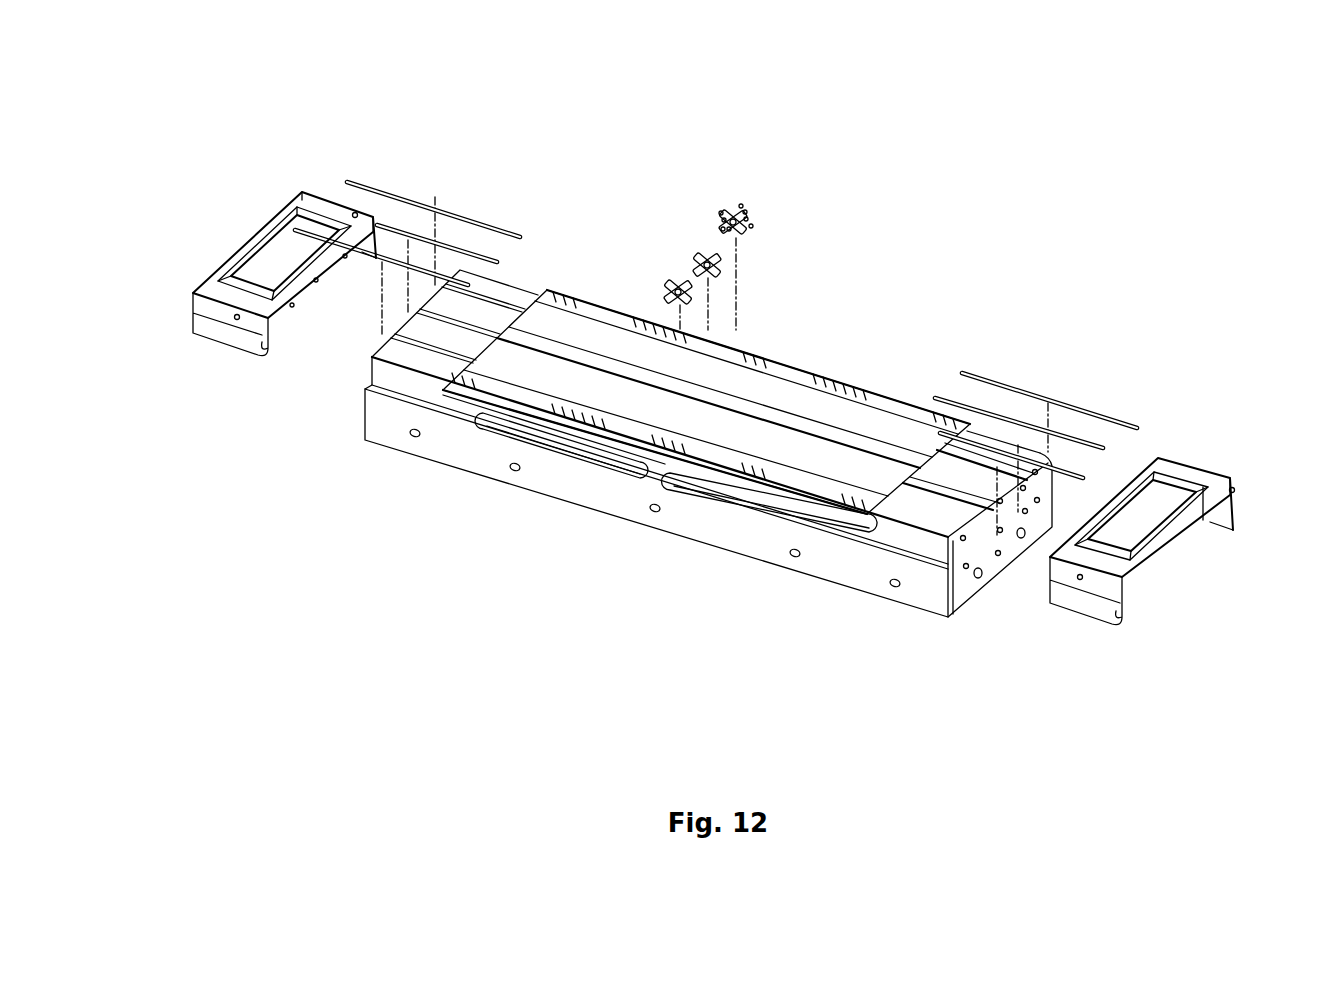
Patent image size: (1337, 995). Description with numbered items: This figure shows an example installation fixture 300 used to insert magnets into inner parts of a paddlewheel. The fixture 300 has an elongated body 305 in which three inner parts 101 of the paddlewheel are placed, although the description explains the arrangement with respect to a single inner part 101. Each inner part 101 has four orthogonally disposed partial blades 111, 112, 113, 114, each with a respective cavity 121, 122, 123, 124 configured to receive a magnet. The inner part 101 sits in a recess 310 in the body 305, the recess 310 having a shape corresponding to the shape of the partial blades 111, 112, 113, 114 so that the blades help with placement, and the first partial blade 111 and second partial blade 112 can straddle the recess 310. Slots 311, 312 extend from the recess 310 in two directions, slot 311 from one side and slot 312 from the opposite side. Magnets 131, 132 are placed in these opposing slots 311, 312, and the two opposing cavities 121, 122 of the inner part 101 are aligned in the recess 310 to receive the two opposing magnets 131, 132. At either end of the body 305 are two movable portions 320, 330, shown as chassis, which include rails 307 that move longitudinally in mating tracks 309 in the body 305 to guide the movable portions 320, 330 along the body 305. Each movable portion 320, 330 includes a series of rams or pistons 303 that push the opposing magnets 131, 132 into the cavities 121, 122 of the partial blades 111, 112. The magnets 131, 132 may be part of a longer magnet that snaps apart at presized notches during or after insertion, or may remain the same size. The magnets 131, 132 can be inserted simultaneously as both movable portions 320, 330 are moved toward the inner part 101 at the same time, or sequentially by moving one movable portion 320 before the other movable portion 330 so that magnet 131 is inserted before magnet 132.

The installation fixture 300 is at (975, 128).
The body 305 is at (855, 390).
The rails 307 is at (355, 215).
The rams or pistons 303 is at (345, 258).
The movable portion 320 is at (243, 277).
The movable portion 330 is at (1127, 550).
The magnet 131 is at (513, 230).
The magnet 132 is at (973, 375).
The inner part 101 is at (730, 206).
The first partial blade 111 is at (723, 217).
The second partial blade 112 is at (747, 217).
The partial blade 113 is at (727, 227).
The partial blade 114 is at (742, 200).
The cavity 121 is at (722, 218).
The cavity 122 is at (752, 225).
The cavity 123 is at (723, 228).
The cavity 124 is at (744, 210).
The mating tracks 309 is at (483, 418).
The recess 310 is at (687, 435).
The slot 311 is at (607, 443).
The slot 312 is at (748, 447).